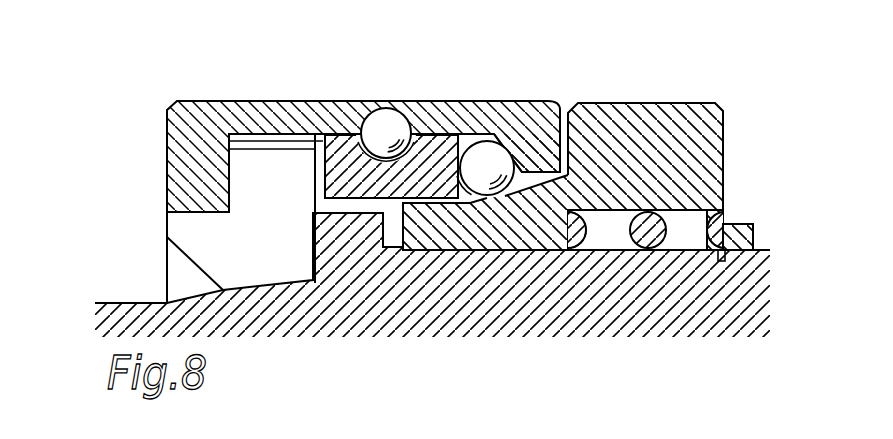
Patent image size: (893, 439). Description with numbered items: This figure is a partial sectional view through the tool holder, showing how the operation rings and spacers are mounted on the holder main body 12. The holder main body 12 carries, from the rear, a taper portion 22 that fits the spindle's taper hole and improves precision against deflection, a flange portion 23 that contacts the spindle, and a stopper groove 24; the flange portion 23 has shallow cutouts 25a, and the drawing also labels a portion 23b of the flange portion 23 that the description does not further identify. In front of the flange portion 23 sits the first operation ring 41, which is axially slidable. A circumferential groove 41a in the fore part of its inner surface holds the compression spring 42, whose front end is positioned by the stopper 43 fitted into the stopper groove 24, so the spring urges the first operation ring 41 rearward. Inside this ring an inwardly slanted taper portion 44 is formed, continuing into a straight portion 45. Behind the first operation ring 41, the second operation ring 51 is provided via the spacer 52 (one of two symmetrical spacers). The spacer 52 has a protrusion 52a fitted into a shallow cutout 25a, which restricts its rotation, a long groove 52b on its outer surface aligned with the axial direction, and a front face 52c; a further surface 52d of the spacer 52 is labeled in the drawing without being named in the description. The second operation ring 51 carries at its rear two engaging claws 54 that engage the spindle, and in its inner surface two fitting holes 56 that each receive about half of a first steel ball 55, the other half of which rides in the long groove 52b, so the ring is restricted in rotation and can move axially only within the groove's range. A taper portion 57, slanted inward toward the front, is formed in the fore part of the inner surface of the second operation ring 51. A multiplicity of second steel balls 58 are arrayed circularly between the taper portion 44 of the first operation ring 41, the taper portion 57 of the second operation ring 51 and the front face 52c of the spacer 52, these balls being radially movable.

The holder main body 12 is at (102, 297).
The taper portion 22 is at (167, 237).
The flange portion 23 is at (313, 258).
The shaft shoulder 23b is at (313, 228).
The stopper groove 24 is at (753, 247).
The shallow cutouts 25a is at (350, 210).
The first operation ring 41 is at (667, 127).
The circumferential groove 41a is at (688, 211).
The compression spring 42 is at (650, 216).
The stopper 43 is at (745, 223).
The taper portion 44 is at (541, 168).
The straight portion 45 is at (540, 227).
The second operation ring 51 is at (200, 100).
The spacer 52 is at (431, 158).
The protrusion 52a is at (335, 162).
The long groove 52b is at (358, 133).
The front face 52c is at (488, 198).
The upper surface of rotor body 52d is at (262, 105).
The engaging claws 54 is at (173, 153).
The first steel ball 55 is at (380, 119).
The fitting holes 56 is at (390, 108).
The taper portion 57 is at (491, 141).
The second steel balls 58 is at (469, 146).